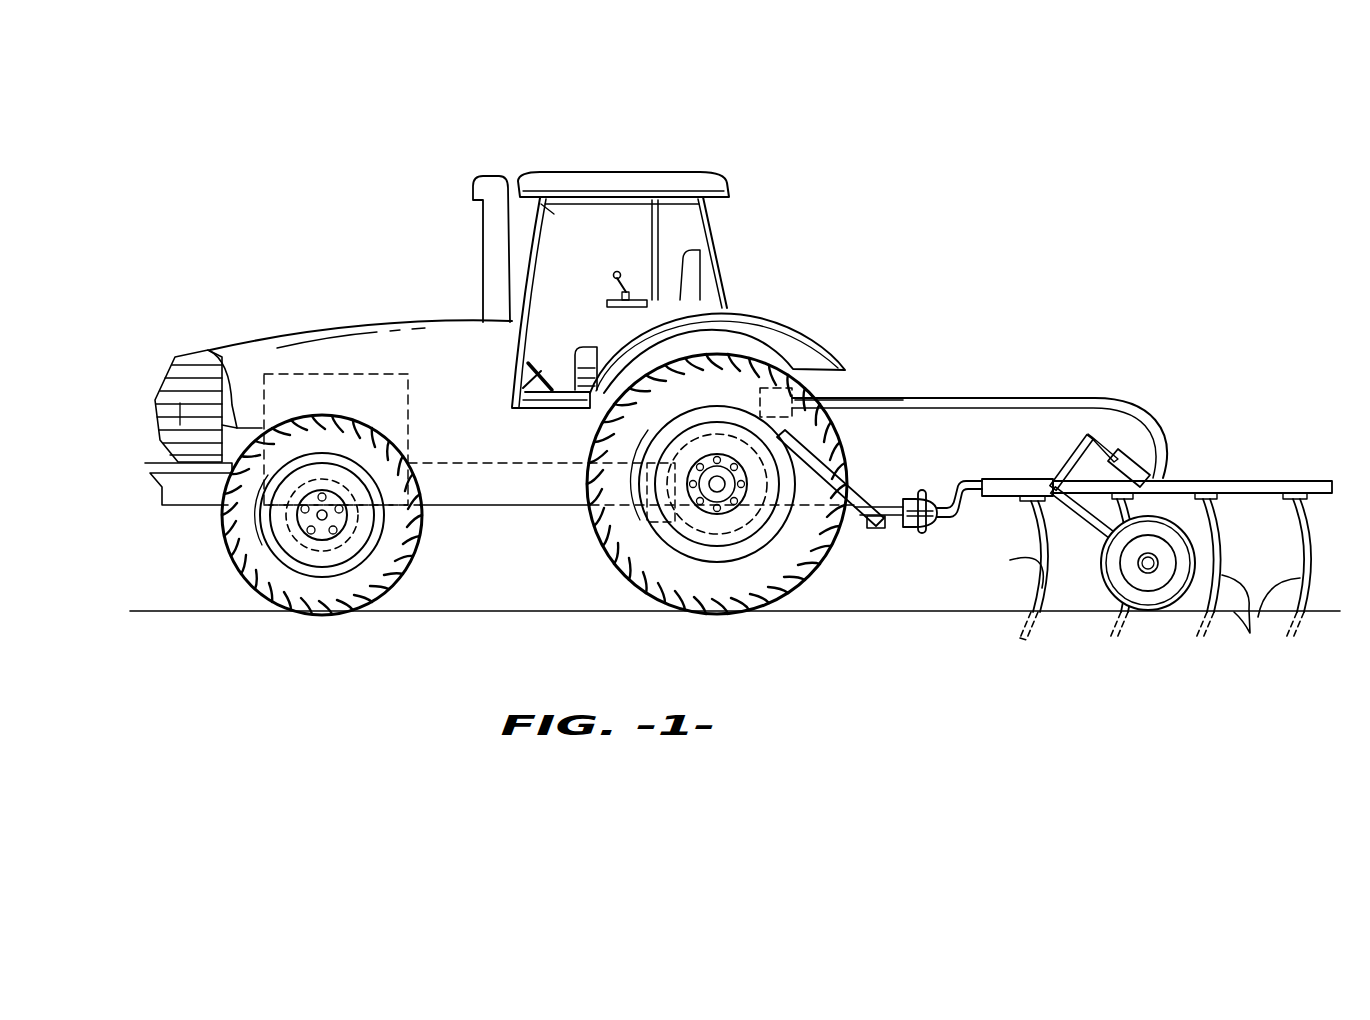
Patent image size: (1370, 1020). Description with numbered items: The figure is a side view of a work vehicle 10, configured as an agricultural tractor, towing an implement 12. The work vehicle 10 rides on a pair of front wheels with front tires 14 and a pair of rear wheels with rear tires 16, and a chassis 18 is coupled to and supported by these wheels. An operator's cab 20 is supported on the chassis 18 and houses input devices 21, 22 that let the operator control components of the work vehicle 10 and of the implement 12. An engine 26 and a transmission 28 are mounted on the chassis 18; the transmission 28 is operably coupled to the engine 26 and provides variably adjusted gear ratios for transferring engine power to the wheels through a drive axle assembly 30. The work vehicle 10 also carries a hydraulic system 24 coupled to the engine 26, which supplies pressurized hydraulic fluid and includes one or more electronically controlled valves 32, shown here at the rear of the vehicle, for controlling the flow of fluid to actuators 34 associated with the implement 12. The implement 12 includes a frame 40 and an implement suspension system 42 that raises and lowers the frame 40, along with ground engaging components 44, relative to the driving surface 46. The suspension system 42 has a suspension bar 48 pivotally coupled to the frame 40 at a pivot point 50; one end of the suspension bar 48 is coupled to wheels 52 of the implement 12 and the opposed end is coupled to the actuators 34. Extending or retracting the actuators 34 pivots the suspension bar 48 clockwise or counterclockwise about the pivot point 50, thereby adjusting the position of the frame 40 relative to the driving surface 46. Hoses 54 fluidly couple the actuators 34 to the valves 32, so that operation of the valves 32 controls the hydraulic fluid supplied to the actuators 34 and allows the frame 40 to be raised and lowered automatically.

The work vehicle 10 is at (270, 192).
The implement 12 is at (1245, 386).
The front tires 14 is at (222, 527).
The rear tires 16 is at (812, 587).
The chassis 18 is at (470, 507).
The operator's cab 20 is at (727, 258).
The input device 21 is at (613, 275).
The input device 22 is at (547, 374).
The hydraulic system 24 is at (864, 378).
The engine 26 is at (326, 374).
The transmission 28 is at (500, 463).
The drive axle assembly 30 is at (850, 490).
The valves 32 is at (762, 388).
The actuators 34 is at (1148, 472).
The frame 40 is at (1256, 481).
The implement suspension system 42 is at (1032, 463).
The ground engaging components 44 is at (1041, 584).
The driving surface 46 is at (920, 610).
The suspension bar 48 is at (1063, 470).
The pivot point 50 is at (1054, 493).
The wheels 52 is at (1155, 601).
The hoses 54 is at (990, 400).